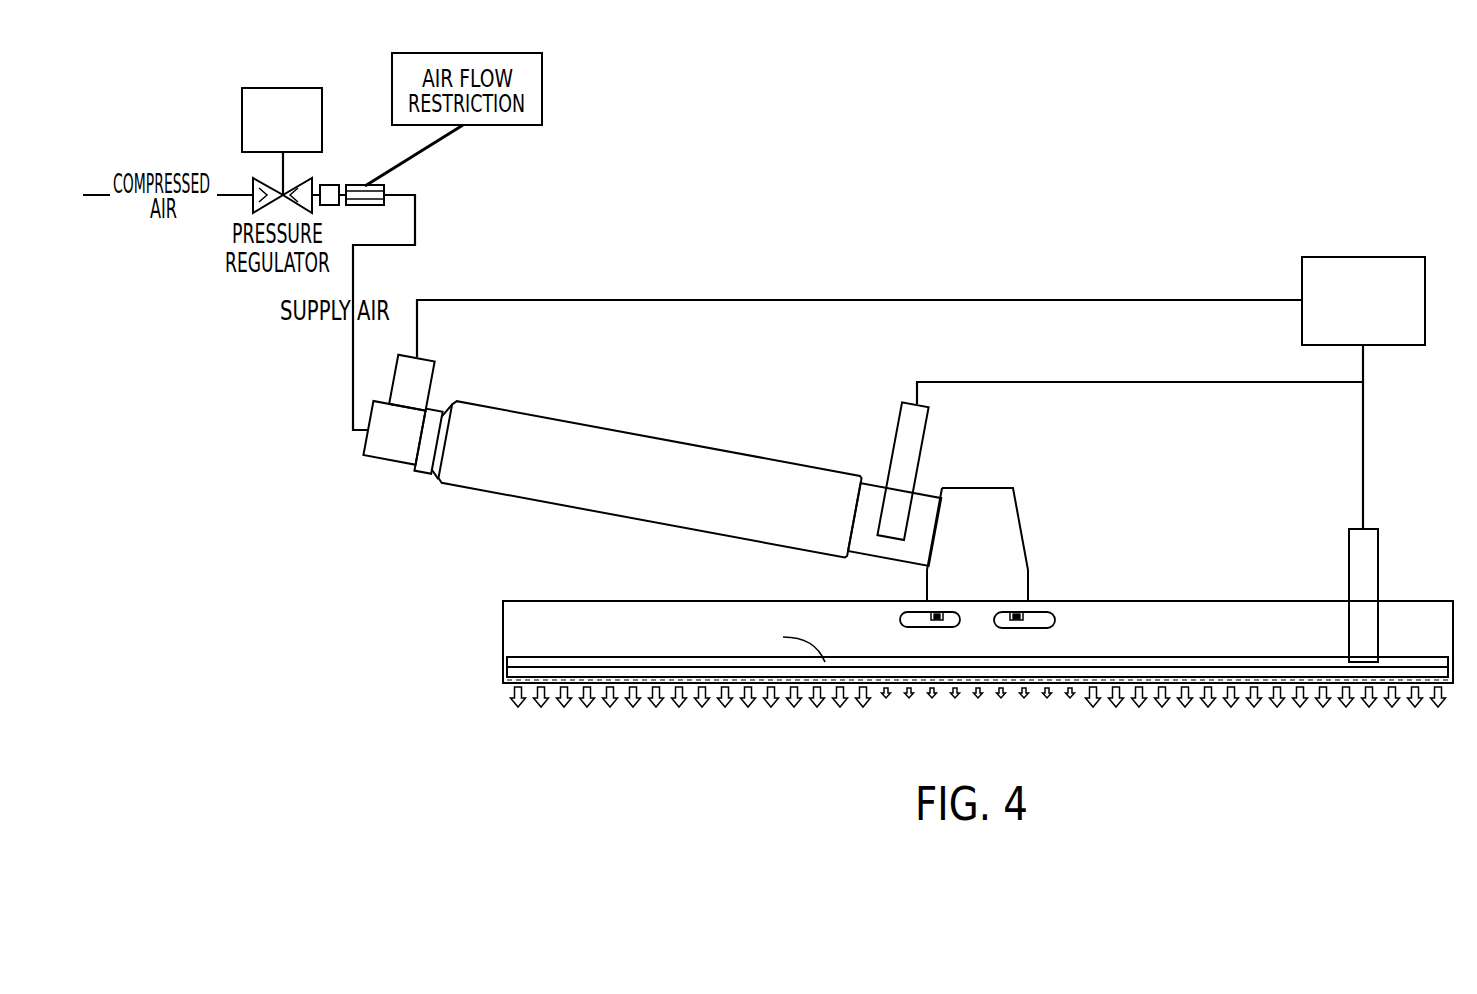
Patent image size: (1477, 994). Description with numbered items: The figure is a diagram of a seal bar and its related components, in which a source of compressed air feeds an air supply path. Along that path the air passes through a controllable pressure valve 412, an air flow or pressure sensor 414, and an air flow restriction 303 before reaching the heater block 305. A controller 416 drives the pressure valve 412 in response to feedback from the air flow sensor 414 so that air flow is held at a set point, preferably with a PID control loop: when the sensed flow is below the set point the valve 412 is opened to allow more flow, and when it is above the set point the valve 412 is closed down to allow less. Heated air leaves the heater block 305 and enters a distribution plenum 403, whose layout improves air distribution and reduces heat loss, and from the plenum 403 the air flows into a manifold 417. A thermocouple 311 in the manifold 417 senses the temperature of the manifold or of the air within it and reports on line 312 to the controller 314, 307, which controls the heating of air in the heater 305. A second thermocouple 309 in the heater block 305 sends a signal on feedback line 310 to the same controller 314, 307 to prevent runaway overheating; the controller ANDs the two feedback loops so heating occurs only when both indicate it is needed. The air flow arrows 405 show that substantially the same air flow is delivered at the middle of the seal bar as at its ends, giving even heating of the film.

The air flow restriction 303 is at (378, 193).
The heater block 305 is at (733, 478).
The controller 307 is at (422, 368).
The second thermocouple 309 is at (923, 442).
The feedback line 310 is at (1140, 380).
The thermocouple 311 is at (1349, 562).
The line 312 is at (1362, 437).
The controller 314 is at (1347, 256).
The distribution plenum 403 is at (1021, 528).
The air flow arrows 405 is at (990, 701).
The controllable pressure valve 412 is at (252, 192).
The air flow or pressure sensor 414 is at (327, 186).
The controller 416 is at (281, 88).
The manifold 417 is at (535, 627).